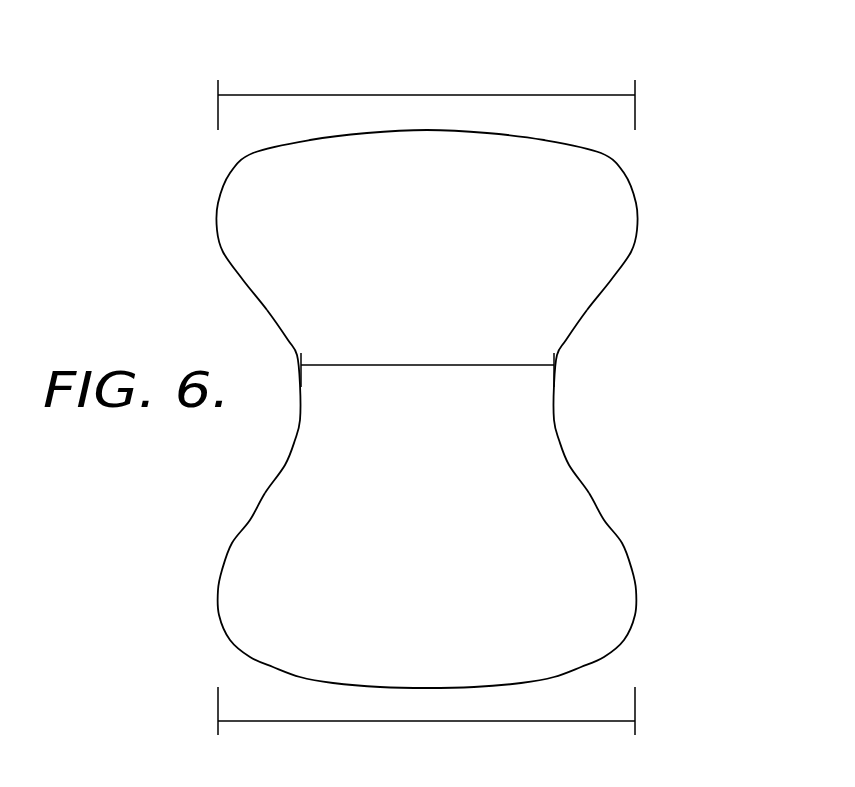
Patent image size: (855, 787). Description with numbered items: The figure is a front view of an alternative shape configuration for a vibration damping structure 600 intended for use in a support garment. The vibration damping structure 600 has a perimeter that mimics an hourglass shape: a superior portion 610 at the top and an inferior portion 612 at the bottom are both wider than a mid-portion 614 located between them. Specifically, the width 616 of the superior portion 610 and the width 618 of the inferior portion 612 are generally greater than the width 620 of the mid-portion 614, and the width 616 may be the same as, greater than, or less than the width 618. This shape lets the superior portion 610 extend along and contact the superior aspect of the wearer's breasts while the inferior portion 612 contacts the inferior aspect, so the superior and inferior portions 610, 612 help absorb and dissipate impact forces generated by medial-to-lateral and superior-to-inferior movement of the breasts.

The vibration damping structure 600 is at (166, 188).
The superior portion 610 is at (675, 130).
The inferior portion 612 is at (675, 510).
The mid-portion 614 is at (675, 318).
The width of the superior portion 616 is at (423, 95).
The width of the inferior portion 618 is at (442, 721).
The width of the mid-portion 620 is at (424, 365).